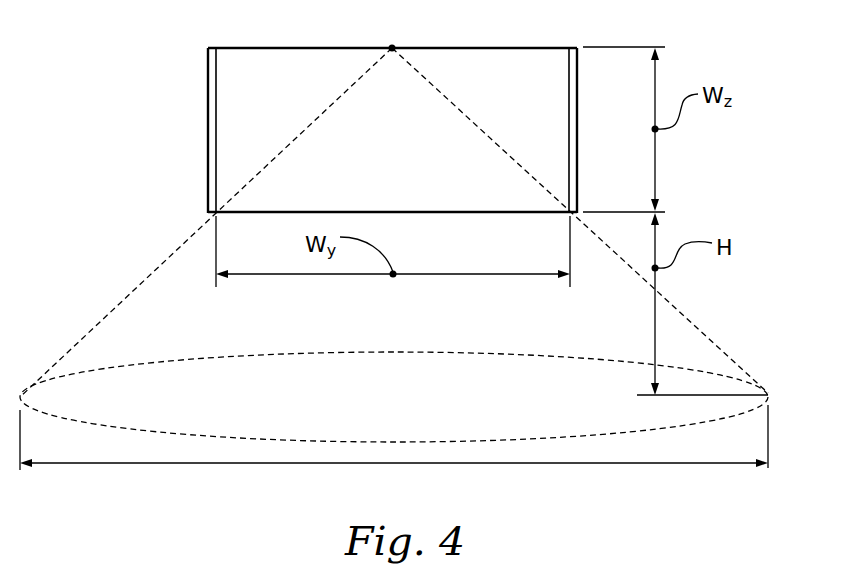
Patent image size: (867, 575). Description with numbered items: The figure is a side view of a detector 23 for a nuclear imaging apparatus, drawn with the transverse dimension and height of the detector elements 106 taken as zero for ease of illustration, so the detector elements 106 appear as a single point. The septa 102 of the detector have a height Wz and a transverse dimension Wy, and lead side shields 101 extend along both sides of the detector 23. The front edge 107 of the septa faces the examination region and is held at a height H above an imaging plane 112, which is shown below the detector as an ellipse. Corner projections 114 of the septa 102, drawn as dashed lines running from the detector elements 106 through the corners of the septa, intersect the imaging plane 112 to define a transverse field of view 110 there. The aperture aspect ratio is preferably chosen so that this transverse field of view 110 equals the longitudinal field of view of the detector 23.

The detector 23 is at (508, 36).
The lead side shields 101 is at (207, 107).
The septa 102 is at (318, 46).
The detector elements 106 is at (393, 51).
The front edge of the septa 107 is at (474, 230).
The field of view 110 is at (175, 464).
The imaging plane 112 is at (355, 377).
The corner projections of the septa 114 is at (120, 305).